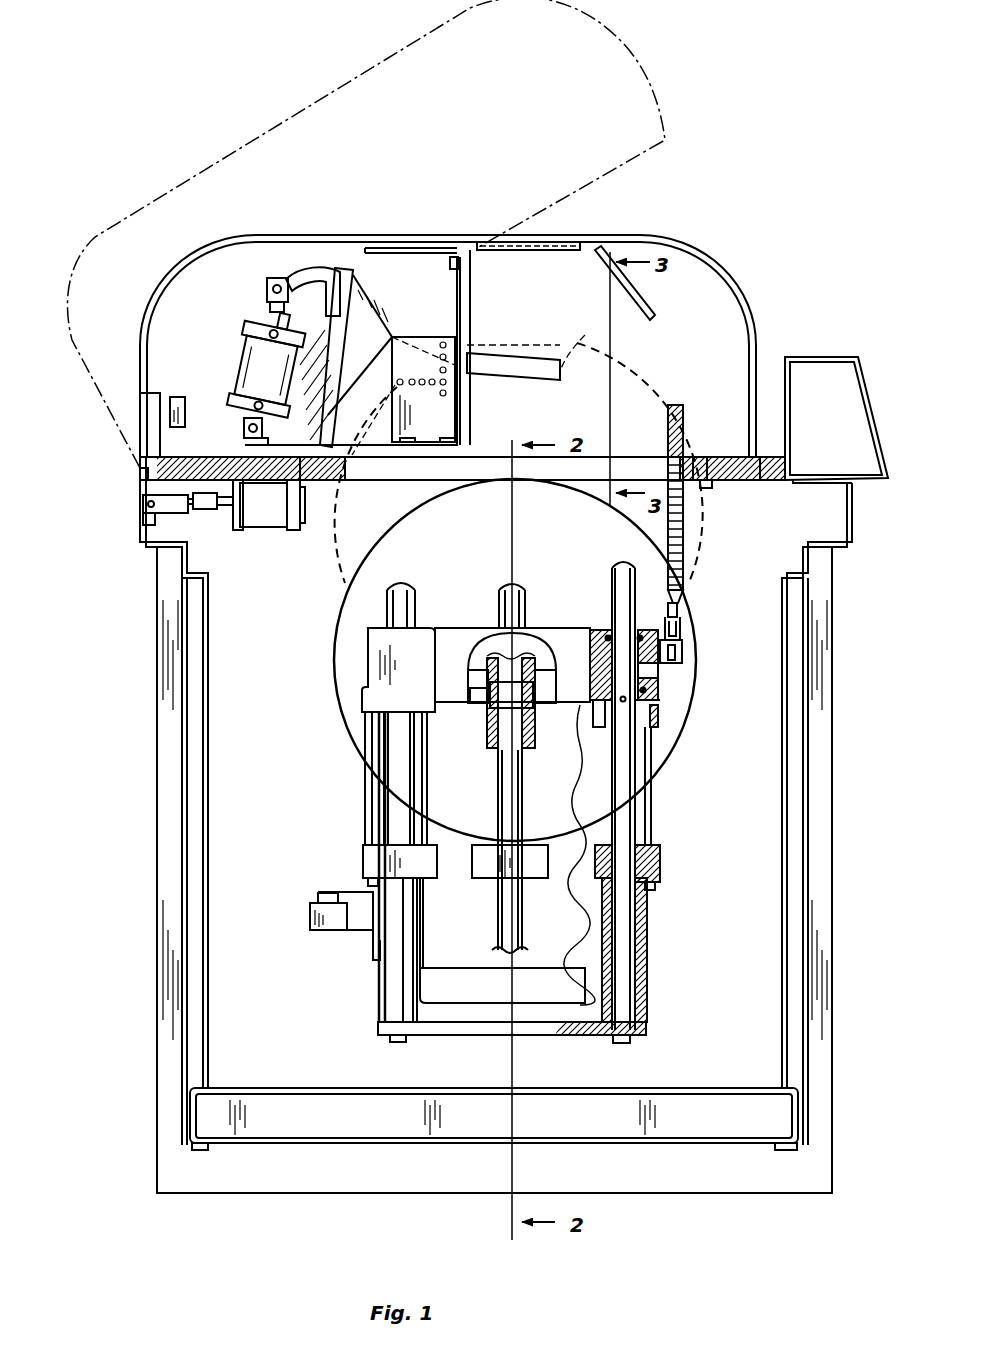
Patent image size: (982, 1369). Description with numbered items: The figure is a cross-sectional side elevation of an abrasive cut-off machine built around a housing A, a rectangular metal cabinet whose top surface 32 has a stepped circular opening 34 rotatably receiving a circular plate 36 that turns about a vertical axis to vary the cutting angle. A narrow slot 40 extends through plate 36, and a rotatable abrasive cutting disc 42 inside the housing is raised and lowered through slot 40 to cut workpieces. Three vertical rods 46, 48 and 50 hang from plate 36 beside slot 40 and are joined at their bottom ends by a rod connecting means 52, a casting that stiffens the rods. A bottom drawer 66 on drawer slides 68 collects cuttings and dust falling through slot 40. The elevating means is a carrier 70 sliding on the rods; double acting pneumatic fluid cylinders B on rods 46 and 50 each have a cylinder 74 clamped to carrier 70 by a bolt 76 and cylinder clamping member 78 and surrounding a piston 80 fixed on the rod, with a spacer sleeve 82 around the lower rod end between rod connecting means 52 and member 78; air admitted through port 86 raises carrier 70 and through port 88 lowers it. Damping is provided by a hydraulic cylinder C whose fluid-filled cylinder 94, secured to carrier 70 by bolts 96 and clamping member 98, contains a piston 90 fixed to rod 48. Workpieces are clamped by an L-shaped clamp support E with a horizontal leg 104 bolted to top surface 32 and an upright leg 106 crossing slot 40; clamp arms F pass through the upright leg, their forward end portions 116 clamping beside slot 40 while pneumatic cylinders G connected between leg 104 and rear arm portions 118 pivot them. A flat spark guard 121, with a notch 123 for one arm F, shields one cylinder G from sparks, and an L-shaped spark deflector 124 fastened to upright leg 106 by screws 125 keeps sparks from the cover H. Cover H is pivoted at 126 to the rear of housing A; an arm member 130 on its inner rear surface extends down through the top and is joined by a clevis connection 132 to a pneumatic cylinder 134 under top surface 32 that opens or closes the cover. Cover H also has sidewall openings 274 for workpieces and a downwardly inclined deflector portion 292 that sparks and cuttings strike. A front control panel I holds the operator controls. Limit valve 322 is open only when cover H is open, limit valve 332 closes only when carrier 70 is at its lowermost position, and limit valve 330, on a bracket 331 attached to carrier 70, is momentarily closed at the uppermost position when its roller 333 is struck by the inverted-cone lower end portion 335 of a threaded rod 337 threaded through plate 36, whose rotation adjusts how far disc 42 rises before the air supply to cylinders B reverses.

The housing A is at (835, 612).
The cover H is at (645, 95).
The front control panel I is at (826, 355).
The pneumatic cylinders G is at (232, 346).
The clamp arms F is at (365, 292).
The clamp support E is at (478, 405).
The double acting fluid cylinders B is at (428, 817).
The hydraulic cylinder C is at (542, 817).
The top surface 32 is at (740, 458).
The circular opening 34 is at (708, 483).
The circular plate 36 is at (693, 460).
The slot 40 is at (628, 470).
The abrasive cutting disc 42 is at (640, 368).
The vertical rod 46 is at (413, 582).
The vertical rod 48 is at (526, 598).
The vertical rod 50 is at (611, 578).
The rod connecting means 52 is at (378, 1027).
The bottom drawer 66 is at (365, 1120).
The drawer slides 68 is at (198, 1147).
The carrier 70 is at (368, 660).
The cylinder 74 is at (378, 745).
The bolt 76 is at (374, 820).
The cylinder clamping member 78 is at (363, 856).
The piston 80 is at (652, 692).
The spacer sleeve 82 is at (648, 956).
The port 86 is at (662, 672).
The port 88 is at (575, 870).
The piston 90 is at (538, 720).
The cylinder 94 is at (538, 766).
The bolts 96 is at (474, 752).
The cylinder clamping member 98 is at (479, 884).
The horizontal leg 104 is at (285, 446).
The upright leg 106 is at (471, 310).
The forward end portions 116 is at (525, 368).
The rear arm portions 118 is at (292, 278).
The spark guard 121 is at (352, 268).
The notch 123 is at (337, 268).
The spark deflector 124 is at (418, 248).
The screws 125 is at (452, 266).
The pivotal connection 126 is at (138, 478).
The arm member 130 is at (150, 393).
The clevis connection 132 is at (137, 510).
The double acting pneumatic cylinder 134 is at (262, 515).
The openings 274 is at (584, 343).
The downwardly inclined deflector portion 292 is at (648, 308).
The limit valve 322 is at (185, 410).
The limit valve 330 is at (680, 640).
The bracket 331 is at (682, 656).
The limit valve 332 is at (310, 918).
The roller 333 is at (676, 622).
The lower end portion 335 is at (682, 587).
The threaded rod 337 is at (684, 541).